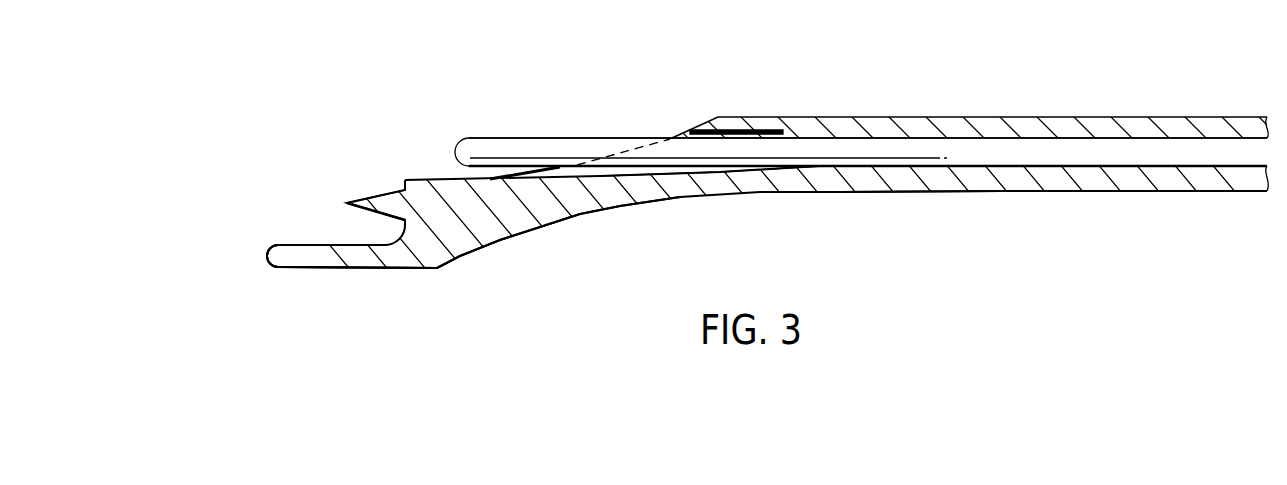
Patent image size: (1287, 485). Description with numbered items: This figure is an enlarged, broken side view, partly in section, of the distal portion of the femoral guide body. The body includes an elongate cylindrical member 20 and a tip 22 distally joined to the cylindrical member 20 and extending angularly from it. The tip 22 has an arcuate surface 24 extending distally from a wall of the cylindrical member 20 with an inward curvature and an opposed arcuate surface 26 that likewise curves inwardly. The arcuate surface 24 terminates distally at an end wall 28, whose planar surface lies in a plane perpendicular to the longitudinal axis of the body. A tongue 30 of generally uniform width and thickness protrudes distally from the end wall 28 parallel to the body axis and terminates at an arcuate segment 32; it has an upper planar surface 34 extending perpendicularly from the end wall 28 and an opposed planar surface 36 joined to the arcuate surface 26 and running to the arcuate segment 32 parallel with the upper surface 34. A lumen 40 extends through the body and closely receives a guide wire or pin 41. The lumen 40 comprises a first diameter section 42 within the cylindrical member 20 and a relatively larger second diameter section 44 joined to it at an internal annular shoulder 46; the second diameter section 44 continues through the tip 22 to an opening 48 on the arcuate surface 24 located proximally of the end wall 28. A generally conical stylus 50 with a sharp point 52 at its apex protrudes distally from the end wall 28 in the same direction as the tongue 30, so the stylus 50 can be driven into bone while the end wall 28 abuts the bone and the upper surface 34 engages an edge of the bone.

The cylindrical member 20 is at (1093, 117).
The tip 22 is at (577, 214).
The arcuate surface 24 is at (490, 175).
The opposed arcuate surface 26 is at (490, 243).
The end wall 28 is at (385, 252).
The tongue 30 is at (277, 243).
The arcuate segment 32 is at (266, 253).
The planar surface 34 is at (309, 244).
The opposed planar surface 36 is at (302, 268).
The lumen 40 is at (957, 137).
The guide wire or pin 41 is at (578, 139).
The first diameter section 42 is at (1025, 167).
The second diameter section 44 is at (655, 173).
The annular shoulder 46 is at (778, 174).
The opening 48 is at (664, 114).
The stylus 50 is at (381, 197).
The point 52 is at (347, 200).